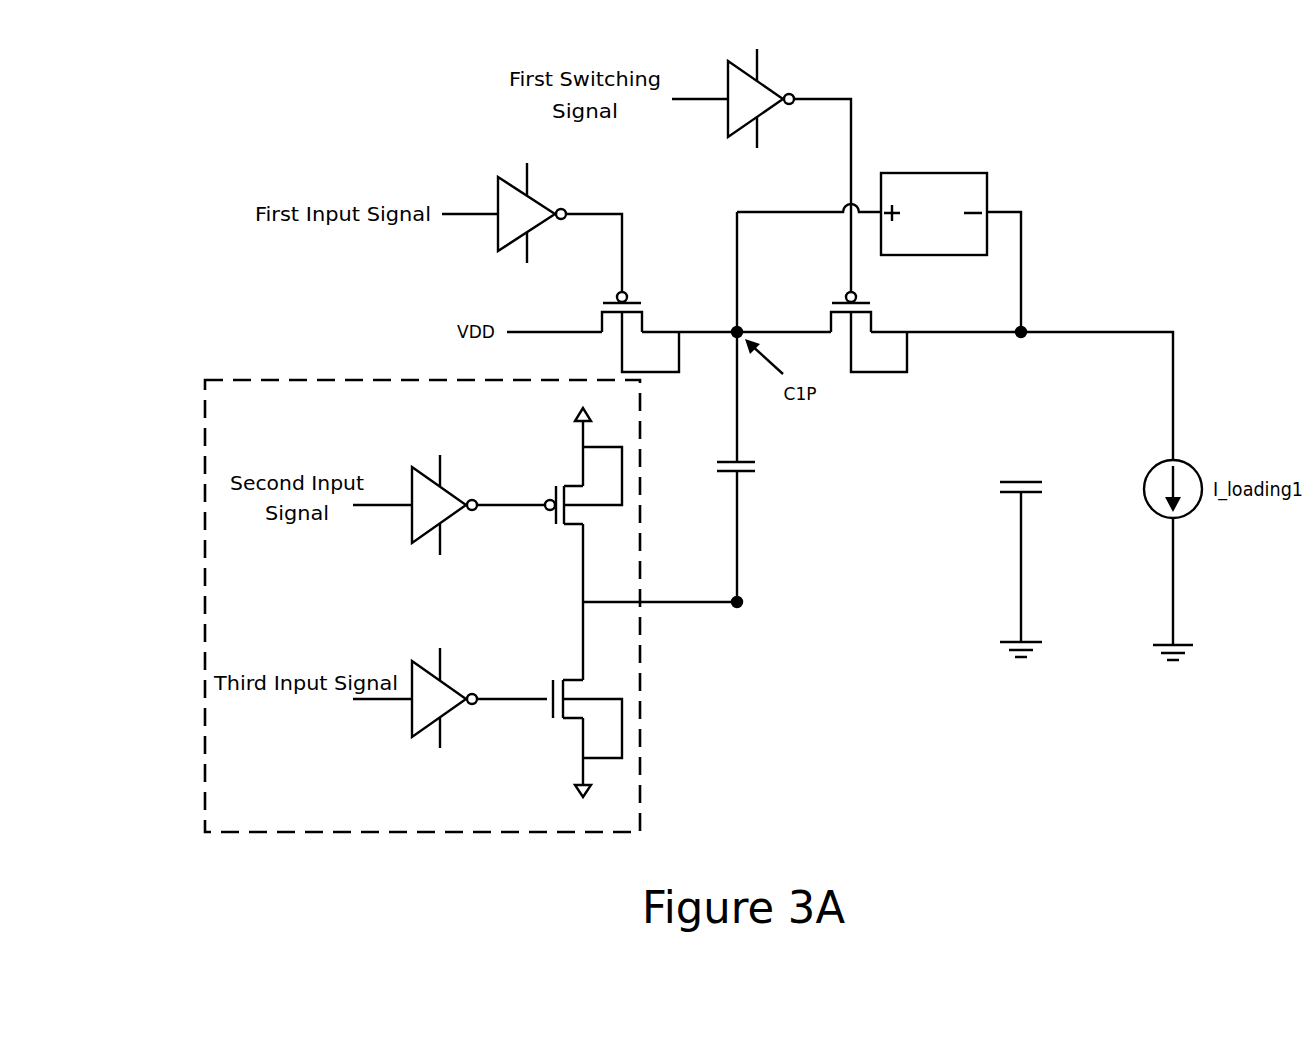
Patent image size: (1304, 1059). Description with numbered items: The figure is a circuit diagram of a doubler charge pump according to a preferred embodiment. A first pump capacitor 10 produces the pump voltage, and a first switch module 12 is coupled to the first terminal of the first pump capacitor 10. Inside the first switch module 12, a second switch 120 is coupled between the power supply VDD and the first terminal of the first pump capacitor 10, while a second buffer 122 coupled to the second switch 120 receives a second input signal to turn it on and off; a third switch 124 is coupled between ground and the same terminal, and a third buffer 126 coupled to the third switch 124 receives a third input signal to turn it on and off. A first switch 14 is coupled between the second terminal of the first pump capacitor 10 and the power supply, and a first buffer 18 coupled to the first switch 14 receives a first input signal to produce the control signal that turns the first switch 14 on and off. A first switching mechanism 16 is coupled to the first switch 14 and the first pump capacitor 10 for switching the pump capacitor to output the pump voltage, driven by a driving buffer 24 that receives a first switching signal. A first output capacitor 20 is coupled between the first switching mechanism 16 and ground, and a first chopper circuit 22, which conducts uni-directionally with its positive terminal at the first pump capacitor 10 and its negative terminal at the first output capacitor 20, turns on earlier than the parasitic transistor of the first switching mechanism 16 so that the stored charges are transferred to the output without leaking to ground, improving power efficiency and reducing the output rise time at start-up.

The first pump capacitor 10 is at (755, 462).
The first switch module 12 is at (640, 803).
The first switch 14 is at (628, 297).
The first switching mechanism 16 is at (871, 322).
The first buffer 18 is at (540, 200).
The first output capacitor 20 is at (1042, 482).
The first chopper circuit 22 is at (988, 193).
The driving buffer 24 is at (770, 87).
The second switch 120 is at (622, 472).
The second buffer 122 is at (456, 496).
The third switch 124 is at (622, 727).
The third buffer 126 is at (456, 690).